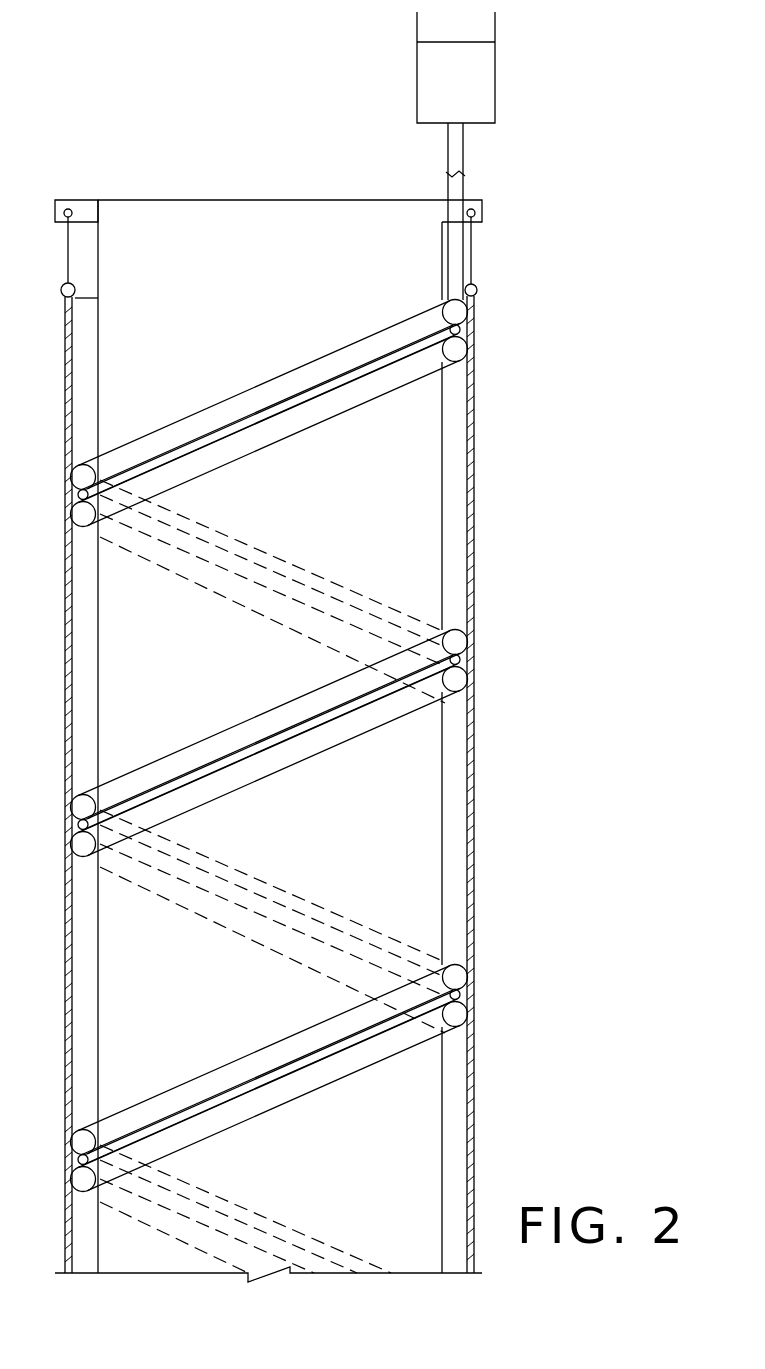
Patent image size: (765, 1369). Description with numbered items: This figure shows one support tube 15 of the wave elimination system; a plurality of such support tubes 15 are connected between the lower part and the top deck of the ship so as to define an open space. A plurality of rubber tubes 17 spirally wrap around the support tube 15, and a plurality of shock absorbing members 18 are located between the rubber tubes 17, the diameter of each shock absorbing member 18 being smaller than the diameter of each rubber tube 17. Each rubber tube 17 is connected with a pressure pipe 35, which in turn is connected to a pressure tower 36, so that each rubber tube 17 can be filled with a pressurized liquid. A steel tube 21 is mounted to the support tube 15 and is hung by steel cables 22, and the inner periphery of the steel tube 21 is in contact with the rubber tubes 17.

The support tube 15 is at (430, 481).
The rubber tube 17 is at (426, 314).
The shock absorbing member 18 is at (385, 362).
The steel tube 21 is at (475, 540).
The steel cable 22 is at (472, 257).
The pressure pipe 35 is at (464, 151).
The pressure tower 36 is at (495, 64).